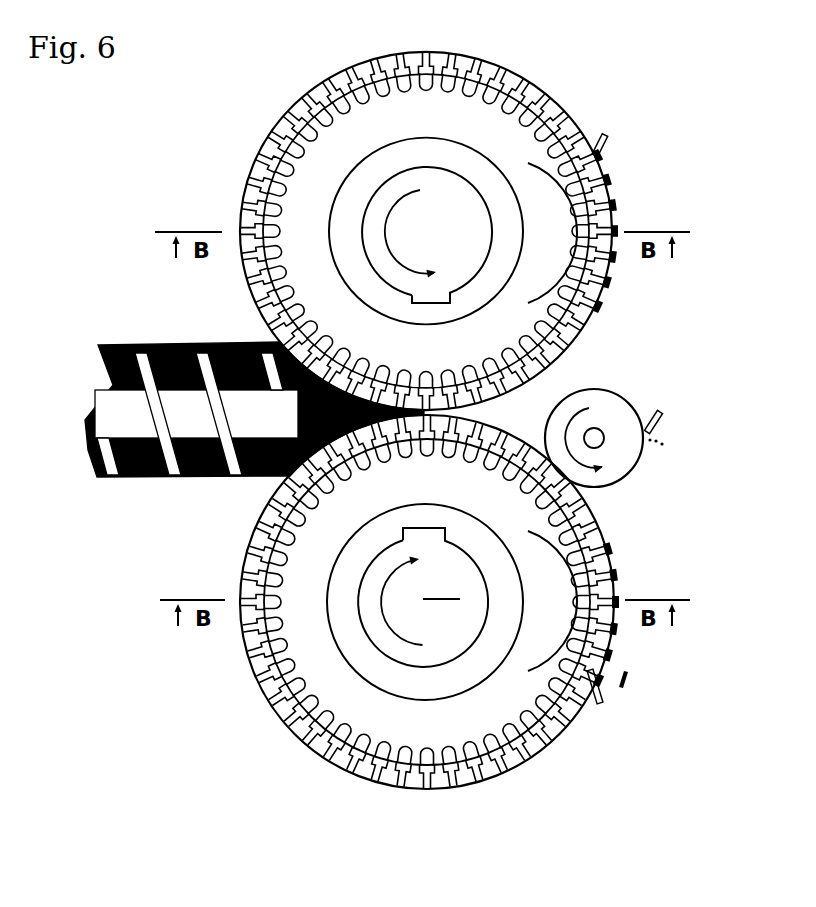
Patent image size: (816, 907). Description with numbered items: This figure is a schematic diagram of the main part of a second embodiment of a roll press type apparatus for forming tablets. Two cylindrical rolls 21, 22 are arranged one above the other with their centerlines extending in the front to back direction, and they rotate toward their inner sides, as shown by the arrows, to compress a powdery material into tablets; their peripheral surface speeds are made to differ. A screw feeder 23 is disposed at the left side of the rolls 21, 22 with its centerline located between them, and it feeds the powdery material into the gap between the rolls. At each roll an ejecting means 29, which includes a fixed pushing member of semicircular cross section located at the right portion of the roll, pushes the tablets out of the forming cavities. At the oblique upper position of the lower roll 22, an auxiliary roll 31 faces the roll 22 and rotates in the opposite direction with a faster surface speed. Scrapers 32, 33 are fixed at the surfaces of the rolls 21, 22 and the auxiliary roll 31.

The roll 21 is at (290, 80).
The roll 22 is at (246, 722).
The screw feeder 23 is at (156, 328).
The ejecting means 29 is at (505, 137).
The auxiliary roll 31 is at (613, 403).
The scraper 32 is at (607, 142).
The scraper 33 is at (662, 421).